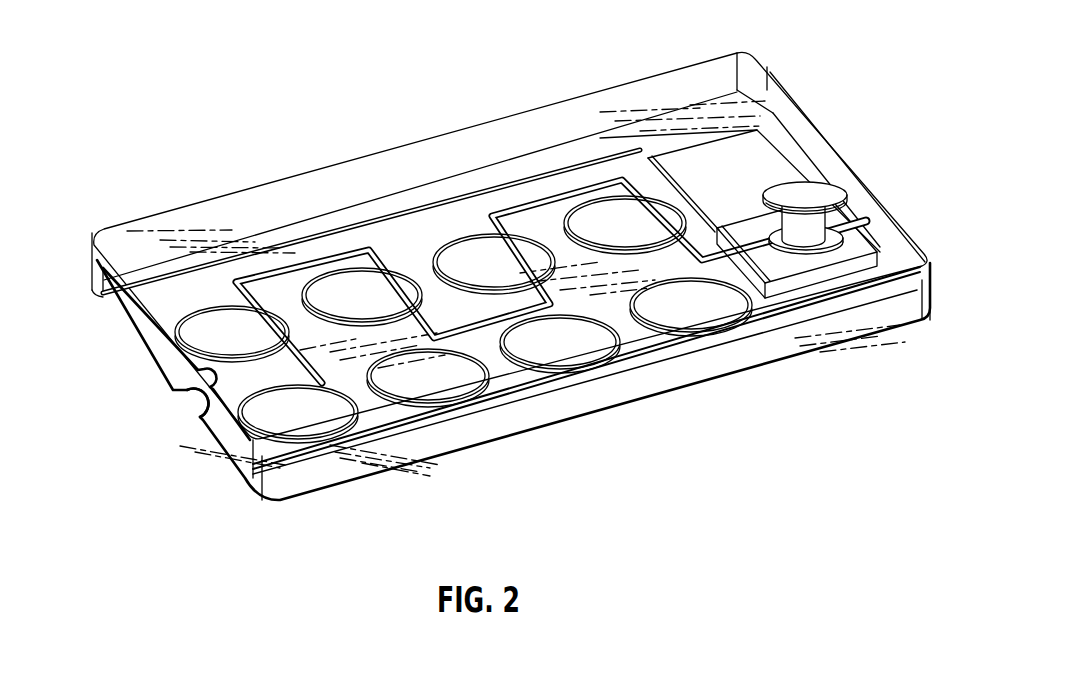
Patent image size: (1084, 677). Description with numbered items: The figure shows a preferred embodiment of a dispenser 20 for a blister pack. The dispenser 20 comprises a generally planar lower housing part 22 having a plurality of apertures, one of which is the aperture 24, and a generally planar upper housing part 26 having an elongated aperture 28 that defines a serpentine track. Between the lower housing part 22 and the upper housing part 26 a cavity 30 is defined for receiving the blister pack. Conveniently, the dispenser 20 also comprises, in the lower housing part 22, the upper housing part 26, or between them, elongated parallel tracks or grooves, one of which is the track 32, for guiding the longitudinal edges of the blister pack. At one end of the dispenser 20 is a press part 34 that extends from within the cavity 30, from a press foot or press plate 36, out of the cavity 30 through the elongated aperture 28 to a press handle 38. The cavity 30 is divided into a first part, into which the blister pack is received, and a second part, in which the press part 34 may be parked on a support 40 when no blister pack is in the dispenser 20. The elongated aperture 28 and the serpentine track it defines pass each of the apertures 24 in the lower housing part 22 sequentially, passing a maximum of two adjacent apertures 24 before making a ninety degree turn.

The dispenser 20 is at (117, 118).
The lower housing part 22 is at (162, 373).
The aperture 24 is at (300, 408).
The upper housing part 26 is at (253, 200).
The elongated aperture 28 is at (553, 210).
The cavity 30 is at (226, 421).
The track or groove 32 is at (110, 300).
The press part 34 is at (852, 200).
The press plate 36 is at (832, 257).
The press handle 38 is at (797, 188).
The support 40 is at (704, 166).